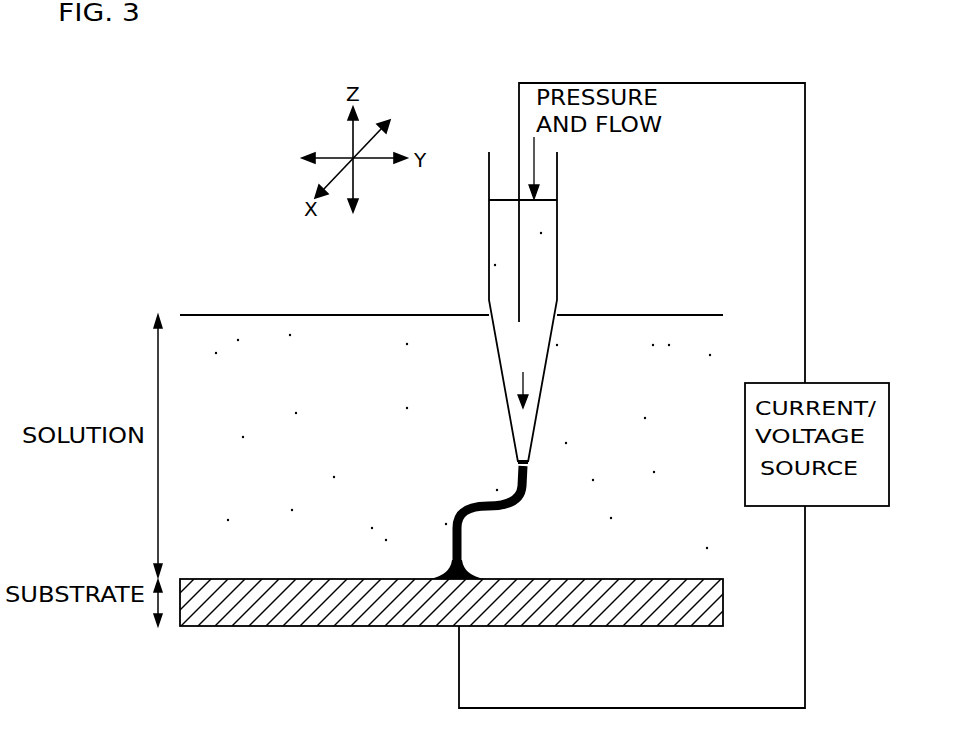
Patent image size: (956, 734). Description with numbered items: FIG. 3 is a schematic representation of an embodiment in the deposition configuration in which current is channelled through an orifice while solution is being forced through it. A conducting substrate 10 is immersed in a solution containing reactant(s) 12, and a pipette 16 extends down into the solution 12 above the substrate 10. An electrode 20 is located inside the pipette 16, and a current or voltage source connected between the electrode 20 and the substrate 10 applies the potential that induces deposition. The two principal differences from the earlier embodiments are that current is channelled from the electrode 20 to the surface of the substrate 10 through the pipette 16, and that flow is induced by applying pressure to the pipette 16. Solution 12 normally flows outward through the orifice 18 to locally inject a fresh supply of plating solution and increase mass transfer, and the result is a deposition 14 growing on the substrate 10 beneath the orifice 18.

The conducting substrate 10 is at (428, 628).
The solution containing reactant(s) 12 is at (628, 396).
The deposition 14 is at (453, 522).
The pipette 16 is at (496, 340).
The orifice 18 is at (532, 460).
The electrode 20 is at (518, 167).